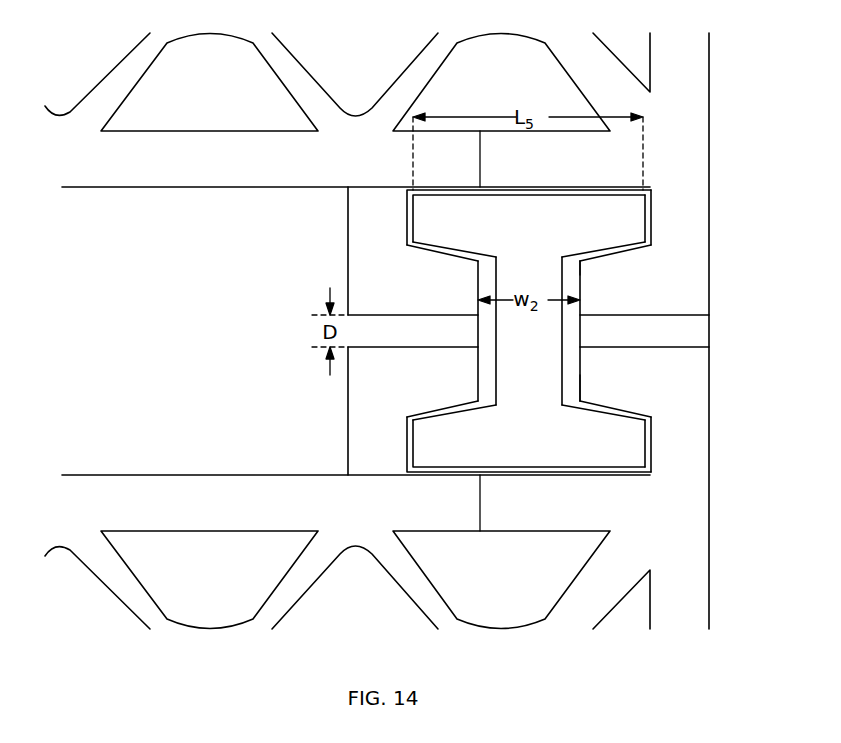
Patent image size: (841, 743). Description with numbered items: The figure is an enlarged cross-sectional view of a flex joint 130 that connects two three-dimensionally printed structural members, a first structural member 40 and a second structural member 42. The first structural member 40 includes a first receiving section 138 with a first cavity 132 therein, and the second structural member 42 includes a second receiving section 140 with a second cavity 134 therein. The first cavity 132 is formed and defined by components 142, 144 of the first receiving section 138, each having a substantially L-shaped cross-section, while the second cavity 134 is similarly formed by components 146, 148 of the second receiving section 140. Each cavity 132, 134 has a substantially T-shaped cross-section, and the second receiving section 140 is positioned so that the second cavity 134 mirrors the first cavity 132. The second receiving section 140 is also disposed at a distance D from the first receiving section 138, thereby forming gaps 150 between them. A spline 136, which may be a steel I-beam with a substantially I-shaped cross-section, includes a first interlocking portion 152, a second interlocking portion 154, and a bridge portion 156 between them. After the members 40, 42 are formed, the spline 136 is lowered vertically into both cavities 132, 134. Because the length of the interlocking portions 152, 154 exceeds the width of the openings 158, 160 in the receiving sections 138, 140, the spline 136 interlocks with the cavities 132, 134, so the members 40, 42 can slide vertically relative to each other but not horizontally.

The first structural member 40 is at (195, 135).
The second structural member 42 is at (185, 500).
The flex joint 130 is at (728, 325).
The first cavity 132 is at (407, 218).
The second cavity 134 is at (407, 447).
The spline 136 is at (572, 207).
The first receiving section 138 is at (330, 257).
The second receiving section 140 is at (333, 410).
The component 142 is at (389, 295).
The component 144 is at (638, 307).
The component 146 is at (388, 395).
The component 148 is at (644, 405).
The gaps 150 is at (389, 345).
The first interlocking portion 152 is at (650, 217).
The second interlocking portion 154 is at (618, 443).
The bridge portion 156 is at (533, 377).
The opening 158 is at (580, 275).
The opening 160 is at (580, 375).